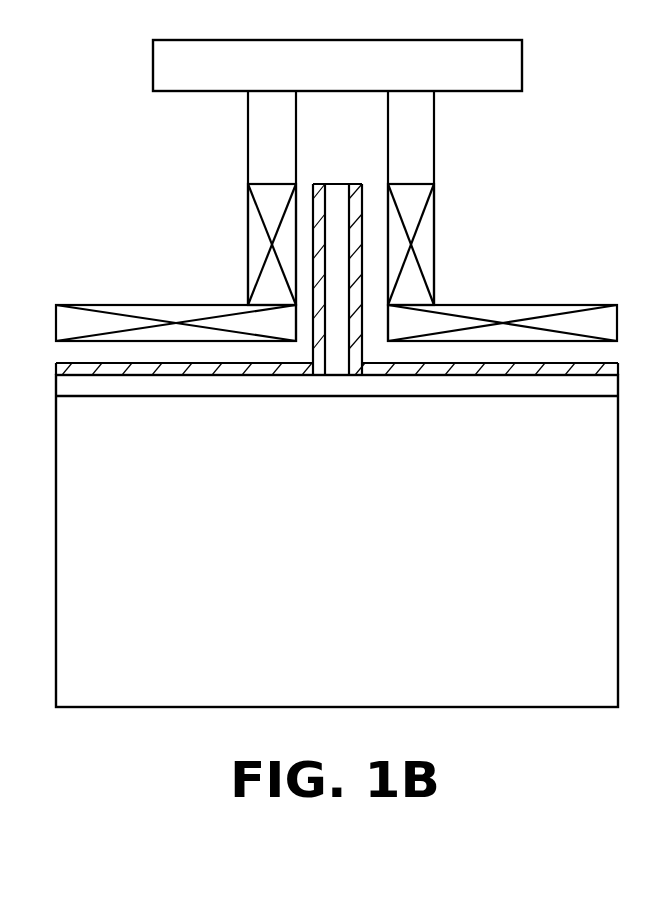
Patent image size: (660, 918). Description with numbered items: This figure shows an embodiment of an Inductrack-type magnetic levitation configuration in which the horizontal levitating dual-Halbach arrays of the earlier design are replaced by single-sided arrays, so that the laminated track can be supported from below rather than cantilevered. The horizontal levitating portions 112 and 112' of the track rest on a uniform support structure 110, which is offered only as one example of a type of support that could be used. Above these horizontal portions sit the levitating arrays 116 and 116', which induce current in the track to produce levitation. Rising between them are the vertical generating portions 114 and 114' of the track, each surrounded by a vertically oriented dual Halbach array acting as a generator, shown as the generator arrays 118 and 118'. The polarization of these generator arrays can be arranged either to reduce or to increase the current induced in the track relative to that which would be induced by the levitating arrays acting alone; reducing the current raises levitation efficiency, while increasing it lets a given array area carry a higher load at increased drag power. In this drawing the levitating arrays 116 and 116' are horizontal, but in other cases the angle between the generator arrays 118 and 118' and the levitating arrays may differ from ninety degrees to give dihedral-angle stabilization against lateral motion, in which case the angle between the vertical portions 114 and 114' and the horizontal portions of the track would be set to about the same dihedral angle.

The support structure 110 is at (380, 472).
The horizontal levitating portion of the track 112 is at (499, 313).
The horizontal levitating portion of the track 112' is at (181, 313).
The vertical generating portion of the track 114 is at (442, 279).
The vertical generating portion of the track 114' is at (253, 279).
The levitating array 116 is at (502, 292).
The levitating array 116' is at (176, 290).
The generator array 118 is at (462, 220).
The generator array 118' is at (218, 224).